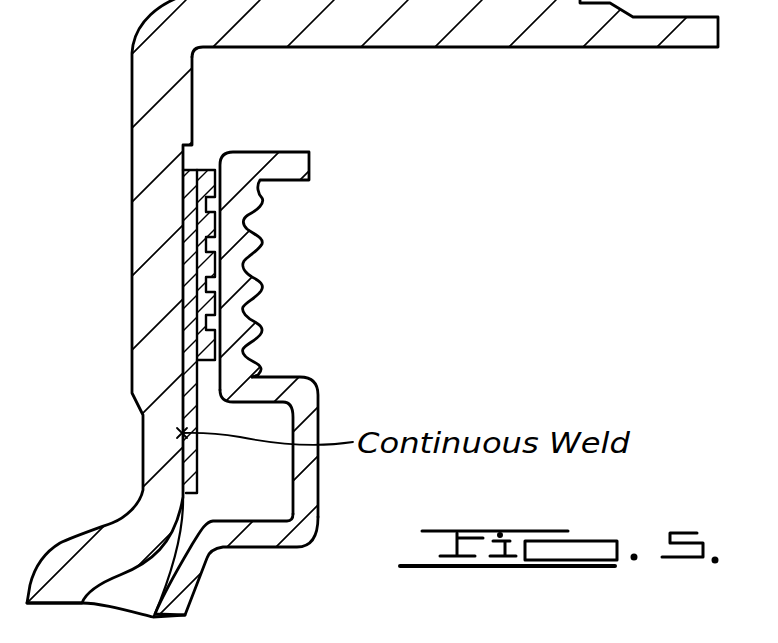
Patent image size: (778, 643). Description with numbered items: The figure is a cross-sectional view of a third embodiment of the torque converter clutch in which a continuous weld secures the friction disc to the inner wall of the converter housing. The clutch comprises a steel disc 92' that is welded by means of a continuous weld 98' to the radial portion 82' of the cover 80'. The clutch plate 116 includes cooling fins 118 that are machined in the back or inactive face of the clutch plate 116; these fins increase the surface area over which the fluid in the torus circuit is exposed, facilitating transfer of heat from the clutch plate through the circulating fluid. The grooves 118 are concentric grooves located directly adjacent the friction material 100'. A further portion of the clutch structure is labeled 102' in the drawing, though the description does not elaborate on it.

The cover 80' is at (455, 53).
The radial portion 82' is at (352, 321).
The steel disc 92' is at (270, 335).
The continuous weld 98' is at (122, 452).
The friction material 100' is at (213, 275).
The lower bracket portion 102' is at (282, 545).
The clutch plate 116 is at (305, 413).
The cooling fins 118 is at (263, 285).